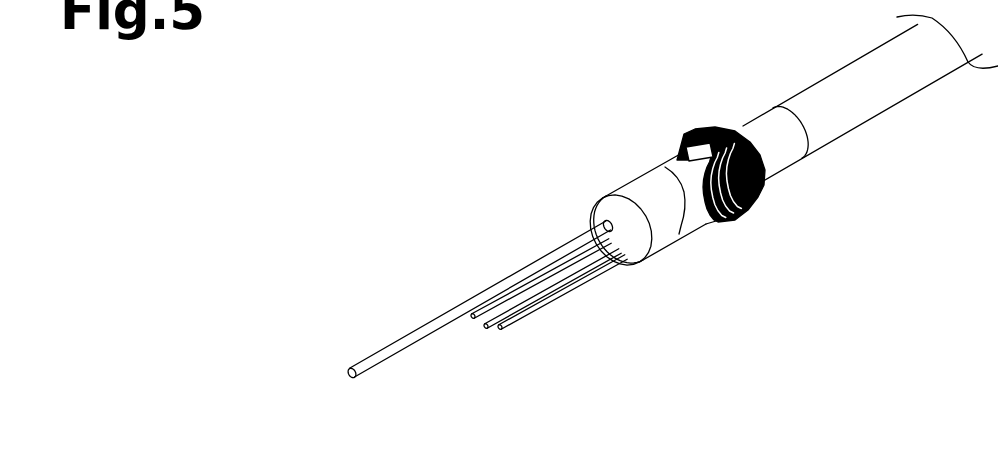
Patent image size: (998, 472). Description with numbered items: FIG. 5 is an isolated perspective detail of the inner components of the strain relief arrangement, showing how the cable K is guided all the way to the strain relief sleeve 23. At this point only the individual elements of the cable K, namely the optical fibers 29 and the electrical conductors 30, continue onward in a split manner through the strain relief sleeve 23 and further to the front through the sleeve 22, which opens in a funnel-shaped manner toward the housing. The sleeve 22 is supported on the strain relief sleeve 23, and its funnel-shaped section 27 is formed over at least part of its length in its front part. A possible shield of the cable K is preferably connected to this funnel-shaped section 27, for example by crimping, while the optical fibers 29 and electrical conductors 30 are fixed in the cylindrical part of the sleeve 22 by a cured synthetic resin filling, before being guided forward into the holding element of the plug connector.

The cable K is at (833, 115).
The sleeve 22 is at (665, 168).
The strain relief sleeve 23 is at (757, 177).
The funnel-shaped section 27 is at (621, 195).
The optical fibers 29 is at (443, 320).
The electrical conductors 30 is at (507, 302).